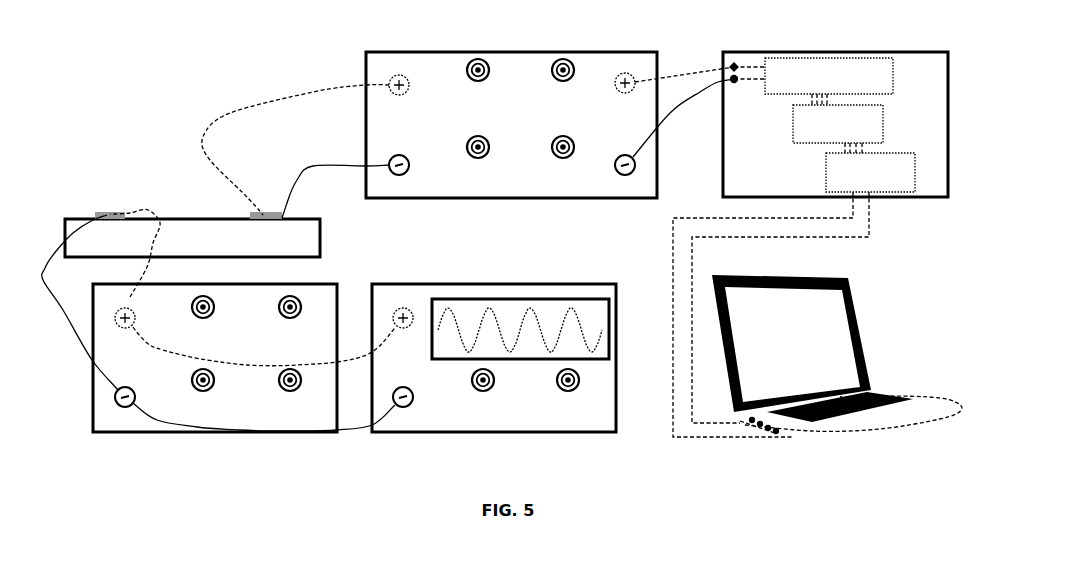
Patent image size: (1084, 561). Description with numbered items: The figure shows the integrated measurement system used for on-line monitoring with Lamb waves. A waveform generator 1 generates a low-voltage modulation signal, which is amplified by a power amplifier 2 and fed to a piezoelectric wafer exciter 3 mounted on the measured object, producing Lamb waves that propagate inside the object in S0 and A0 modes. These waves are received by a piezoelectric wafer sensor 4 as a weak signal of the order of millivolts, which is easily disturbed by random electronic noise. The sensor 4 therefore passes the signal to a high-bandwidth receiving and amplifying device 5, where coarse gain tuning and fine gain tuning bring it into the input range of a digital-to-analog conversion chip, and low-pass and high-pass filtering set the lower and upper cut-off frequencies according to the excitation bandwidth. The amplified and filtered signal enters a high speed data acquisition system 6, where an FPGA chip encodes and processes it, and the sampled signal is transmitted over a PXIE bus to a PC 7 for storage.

The waveform generator 1 is at (494, 344).
The power amplifier 2 is at (218, 321).
The piezoelectric wafer exciter 3 is at (192, 207).
The piezoelectric wafer sensor 4 is at (295, 152).
The high-bandwidth receiving and amplifying device 5 is at (550, 113).
The high speed data acquisition system 6 is at (810, 232).
The PC 7 is at (837, 354).